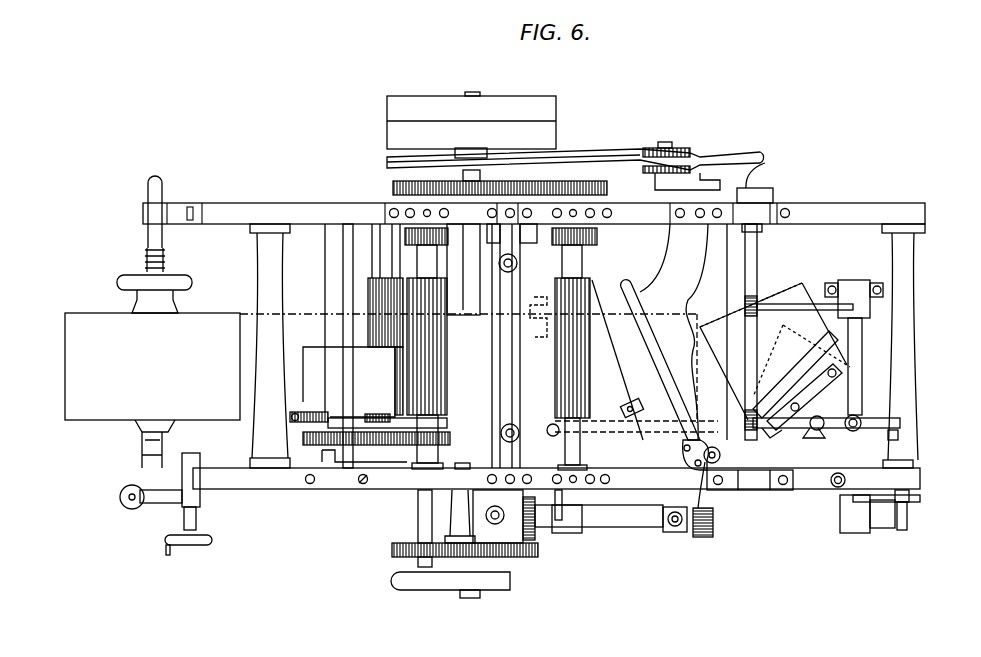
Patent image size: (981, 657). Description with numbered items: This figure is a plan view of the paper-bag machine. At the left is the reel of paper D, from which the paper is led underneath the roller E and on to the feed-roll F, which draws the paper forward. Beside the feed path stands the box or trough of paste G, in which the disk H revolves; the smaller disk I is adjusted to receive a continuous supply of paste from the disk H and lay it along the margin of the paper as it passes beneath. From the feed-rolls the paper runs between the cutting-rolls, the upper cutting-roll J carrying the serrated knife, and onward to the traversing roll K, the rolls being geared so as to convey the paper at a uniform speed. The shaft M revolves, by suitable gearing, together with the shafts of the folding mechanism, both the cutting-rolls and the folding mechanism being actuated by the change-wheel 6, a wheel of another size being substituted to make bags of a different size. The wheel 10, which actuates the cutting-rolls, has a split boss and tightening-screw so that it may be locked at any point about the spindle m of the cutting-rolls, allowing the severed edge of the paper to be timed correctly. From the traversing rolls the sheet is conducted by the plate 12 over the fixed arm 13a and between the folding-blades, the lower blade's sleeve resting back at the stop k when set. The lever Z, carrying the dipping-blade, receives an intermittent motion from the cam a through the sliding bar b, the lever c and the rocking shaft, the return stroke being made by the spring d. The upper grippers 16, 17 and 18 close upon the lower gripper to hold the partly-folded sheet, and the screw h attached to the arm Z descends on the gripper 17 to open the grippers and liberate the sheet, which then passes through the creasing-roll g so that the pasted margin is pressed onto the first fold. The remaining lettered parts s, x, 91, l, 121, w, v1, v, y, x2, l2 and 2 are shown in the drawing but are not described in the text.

The reel of paper D is at (152, 366).
The box or trough of paste G is at (349, 382).
The roller E is at (377, 346).
The feed-roll F is at (431, 348).
The disk H is at (327, 422).
The smaller disk I is at (392, 445).
The shaft M is at (505, 364).
The traversing roll K is at (574, 349).
The cutting-roll J is at (543, 452).
The plate s is at (608, 441).
The lever x is at (754, 156).
The fixed arm 13a is at (674, 332).
The rod 91 is at (731, 272).
The creasing-roll g is at (757, 270).
The frame l is at (830, 242).
The arm 121 is at (735, 360).
The plate 12 is at (617, 360).
The lever Z is at (805, 302).
The spring d is at (900, 435).
The screw h is at (826, 435).
The upper gripper 16 is at (812, 356).
The upper gripper 17 is at (790, 392).
The upper gripper 18 is at (776, 441).
The cam w is at (682, 462).
The pivot v1 is at (714, 463).
The pin v is at (666, 470).
The link y is at (707, 466).
The stop k is at (678, 527).
The gear x2 is at (705, 537).
The wheel 10 is at (476, 516).
The hub l2 is at (494, 518).
The spindle of the cutting-rolls m is at (538, 558).
The change-wheel 6 is at (408, 556).
The base 2 is at (472, 560).
The lever c is at (845, 478).
The cam a is at (888, 533).
The sliding bar b is at (920, 498).